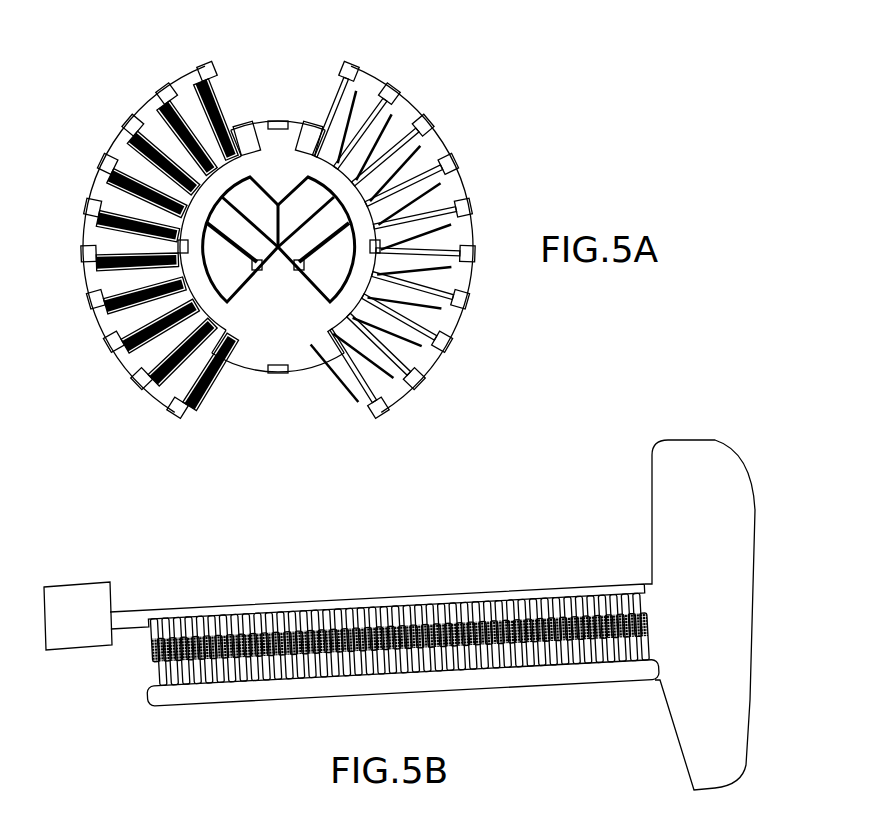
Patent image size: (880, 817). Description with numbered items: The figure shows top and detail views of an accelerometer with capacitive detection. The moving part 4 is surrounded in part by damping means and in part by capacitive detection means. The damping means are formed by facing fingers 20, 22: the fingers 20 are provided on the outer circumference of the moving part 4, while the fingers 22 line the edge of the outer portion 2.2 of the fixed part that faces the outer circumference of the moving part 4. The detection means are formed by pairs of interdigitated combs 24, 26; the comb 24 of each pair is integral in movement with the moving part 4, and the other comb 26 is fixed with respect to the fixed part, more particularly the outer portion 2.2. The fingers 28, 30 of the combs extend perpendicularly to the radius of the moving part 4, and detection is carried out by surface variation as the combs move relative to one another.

In FIG. 5A, the moving part 4 is at (267, 165).
In FIG. 5B, the moving part 4 is at (683, 452).
In FIG. 5A, the outer portion of the fixed part 2.2 is at (388, 100).
In FIG. 5B, the outer portion of the fixed part 2.2 is at (73, 595).
In FIG. 5A, the fingers of the moving part 20 is at (358, 105).
In FIG. 5A, the fingers of the outer portion 22 is at (338, 97).
In FIG. 5A, the comb 24 is at (190, 137).
In FIG. 5B, the comb 24 is at (403, 688).
In FIG. 5A, the comb 26 is at (190, 110).
In FIG. 5B, the comb 26 is at (377, 596).
In FIG. 5B, the fingers 28 is at (462, 605).
In FIG. 5B, the fingers 30 is at (462, 655).